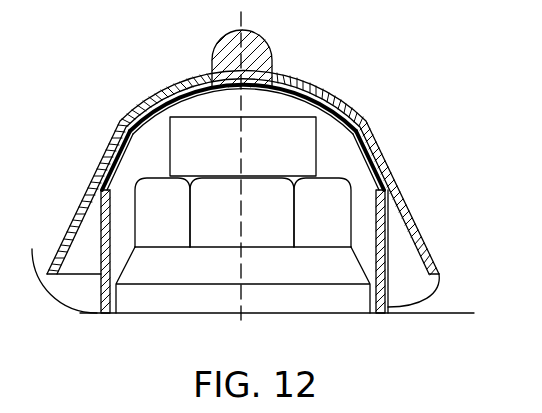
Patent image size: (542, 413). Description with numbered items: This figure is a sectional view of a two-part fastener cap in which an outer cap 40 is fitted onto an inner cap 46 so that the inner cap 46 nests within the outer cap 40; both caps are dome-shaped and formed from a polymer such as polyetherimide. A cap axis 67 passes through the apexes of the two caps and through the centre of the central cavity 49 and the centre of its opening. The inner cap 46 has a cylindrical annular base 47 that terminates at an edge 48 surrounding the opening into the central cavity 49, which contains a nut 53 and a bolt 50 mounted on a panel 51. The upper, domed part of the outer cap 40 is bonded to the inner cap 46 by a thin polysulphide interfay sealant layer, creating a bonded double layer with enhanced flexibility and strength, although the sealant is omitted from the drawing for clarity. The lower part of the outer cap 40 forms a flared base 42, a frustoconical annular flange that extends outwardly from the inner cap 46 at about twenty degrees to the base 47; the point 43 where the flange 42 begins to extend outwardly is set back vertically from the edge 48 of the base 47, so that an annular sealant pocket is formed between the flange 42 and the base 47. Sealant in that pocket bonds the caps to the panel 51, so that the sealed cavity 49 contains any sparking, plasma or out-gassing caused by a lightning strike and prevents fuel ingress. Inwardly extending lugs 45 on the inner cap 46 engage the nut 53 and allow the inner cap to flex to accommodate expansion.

The outer cap 40 is at (124, 127).
The flared base 42 is at (422, 234).
The point where the flange begins to extend outwardly 43 is at (396, 182).
The inwardly extending lugs 45 is at (116, 314).
The inner cap 46 is at (296, 86).
The cylindrical annular base 47 is at (100, 217).
The edge 48 is at (103, 315).
The central cavity 49 is at (163, 168).
The bolt 50 is at (320, 132).
The panel 51 is at (467, 311).
The nut 53 is at (334, 180).
The cap axis 67 is at (242, 322).